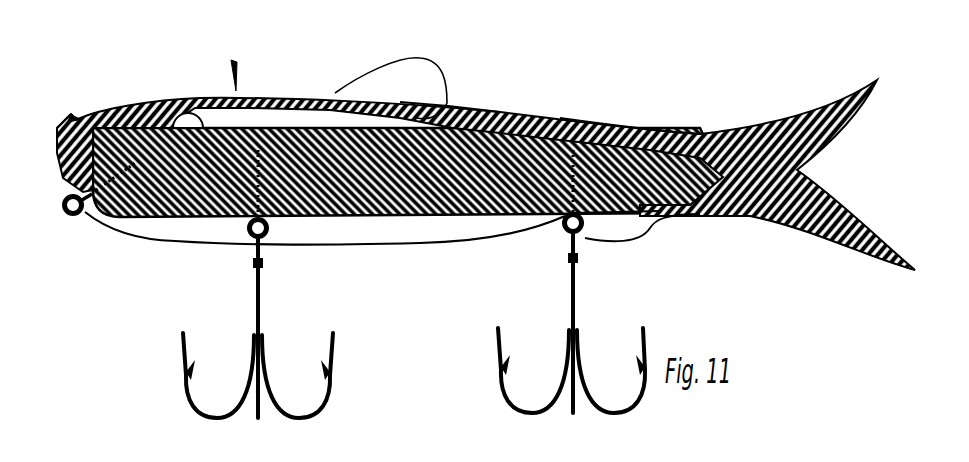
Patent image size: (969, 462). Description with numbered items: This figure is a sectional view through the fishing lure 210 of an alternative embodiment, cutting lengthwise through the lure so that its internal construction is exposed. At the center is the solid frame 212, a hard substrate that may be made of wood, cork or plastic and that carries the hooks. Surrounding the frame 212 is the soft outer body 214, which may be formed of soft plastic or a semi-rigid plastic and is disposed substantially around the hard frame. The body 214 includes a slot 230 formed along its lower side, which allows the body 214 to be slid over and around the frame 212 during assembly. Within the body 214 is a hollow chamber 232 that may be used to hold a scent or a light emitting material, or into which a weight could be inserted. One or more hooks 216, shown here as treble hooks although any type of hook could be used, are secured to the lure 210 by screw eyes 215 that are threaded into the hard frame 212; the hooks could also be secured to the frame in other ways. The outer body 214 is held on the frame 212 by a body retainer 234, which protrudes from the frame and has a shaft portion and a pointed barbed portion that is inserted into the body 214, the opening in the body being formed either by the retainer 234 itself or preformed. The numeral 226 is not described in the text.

The fishing lure 210 is at (236, 90).
The solid frame 212 is at (179, 111).
The soft outer body 214 is at (258, 100).
The screw eyes 215 is at (75, 217).
The hooks 216 is at (569, 316).
The dorsal fin 226 is at (623, 120).
The slot 230 is at (414, 231).
The hollow chamber 232 is at (471, 104).
The body retainer 234 is at (74, 119).